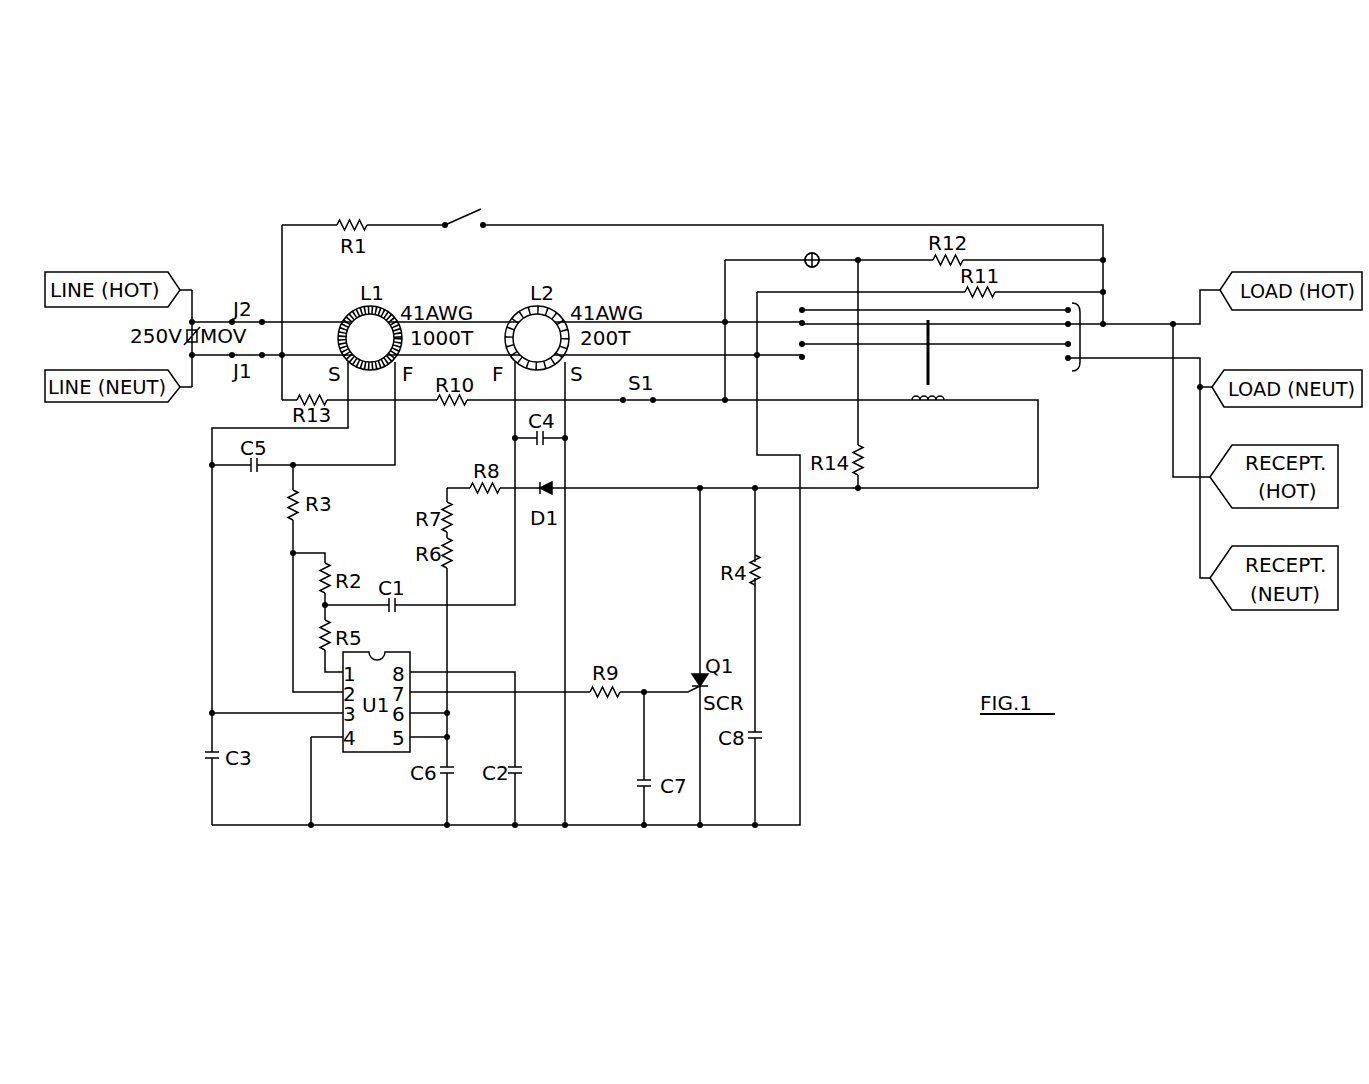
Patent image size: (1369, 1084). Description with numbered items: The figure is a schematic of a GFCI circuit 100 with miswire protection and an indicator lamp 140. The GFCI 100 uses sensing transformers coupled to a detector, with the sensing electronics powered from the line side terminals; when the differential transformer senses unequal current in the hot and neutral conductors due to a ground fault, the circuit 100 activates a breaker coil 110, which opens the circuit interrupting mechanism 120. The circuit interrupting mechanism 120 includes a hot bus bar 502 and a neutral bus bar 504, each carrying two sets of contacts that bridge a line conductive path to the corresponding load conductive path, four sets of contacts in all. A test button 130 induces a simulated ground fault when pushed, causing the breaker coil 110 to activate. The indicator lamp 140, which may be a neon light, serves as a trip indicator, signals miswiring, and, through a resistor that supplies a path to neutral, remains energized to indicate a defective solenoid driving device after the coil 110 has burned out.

The GFCI circuit 100 is at (828, 566).
The breaker coil 110 is at (948, 398).
The circuit interrupting mechanism 120 is at (1085, 336).
The test button 130 is at (460, 209).
The indicator lamp 140 is at (818, 253).
The hot bus bar 502 is at (1027, 310).
The neutral bus bar 504 is at (1037, 344).